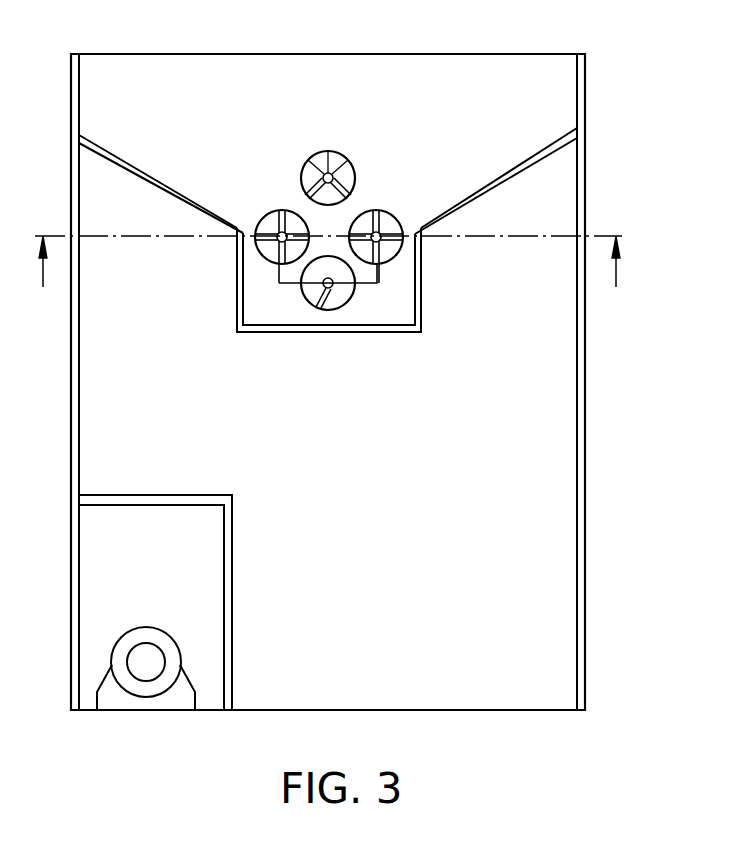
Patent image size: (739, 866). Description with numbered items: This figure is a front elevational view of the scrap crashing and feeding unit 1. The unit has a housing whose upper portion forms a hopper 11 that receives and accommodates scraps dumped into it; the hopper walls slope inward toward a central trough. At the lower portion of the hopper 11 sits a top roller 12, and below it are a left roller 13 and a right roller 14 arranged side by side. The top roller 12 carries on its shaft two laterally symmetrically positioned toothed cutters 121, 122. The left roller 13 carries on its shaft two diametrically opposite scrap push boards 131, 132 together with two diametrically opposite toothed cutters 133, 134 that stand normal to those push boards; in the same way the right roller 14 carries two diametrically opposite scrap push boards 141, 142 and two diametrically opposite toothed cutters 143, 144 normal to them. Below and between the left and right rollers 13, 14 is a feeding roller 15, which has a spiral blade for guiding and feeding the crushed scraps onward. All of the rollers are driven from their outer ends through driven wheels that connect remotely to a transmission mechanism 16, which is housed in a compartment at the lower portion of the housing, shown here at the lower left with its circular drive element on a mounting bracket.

The scrap crashing and feeding unit 1 is at (588, 163).
The hopper 11 is at (505, 83).
The top roller 12 is at (328, 151).
The toothed cutter 121 is at (305, 165).
The toothed cutter 122 is at (352, 160).
The left roller 13 is at (262, 243).
The scrap push board 131 is at (280, 211).
The scrap push board 132 is at (265, 260).
The toothed cutter 133 is at (292, 268).
The toothed cutter 134 is at (258, 222).
The right roller 14 is at (392, 217).
The scrap push board 141 is at (377, 211).
The scrap push board 142 is at (388, 258).
The toothed cutter 143 is at (384, 237).
The toothed cutter 144 is at (372, 292).
The feeding roller 15 is at (318, 312).
The transmission mechanism 16 is at (105, 593).